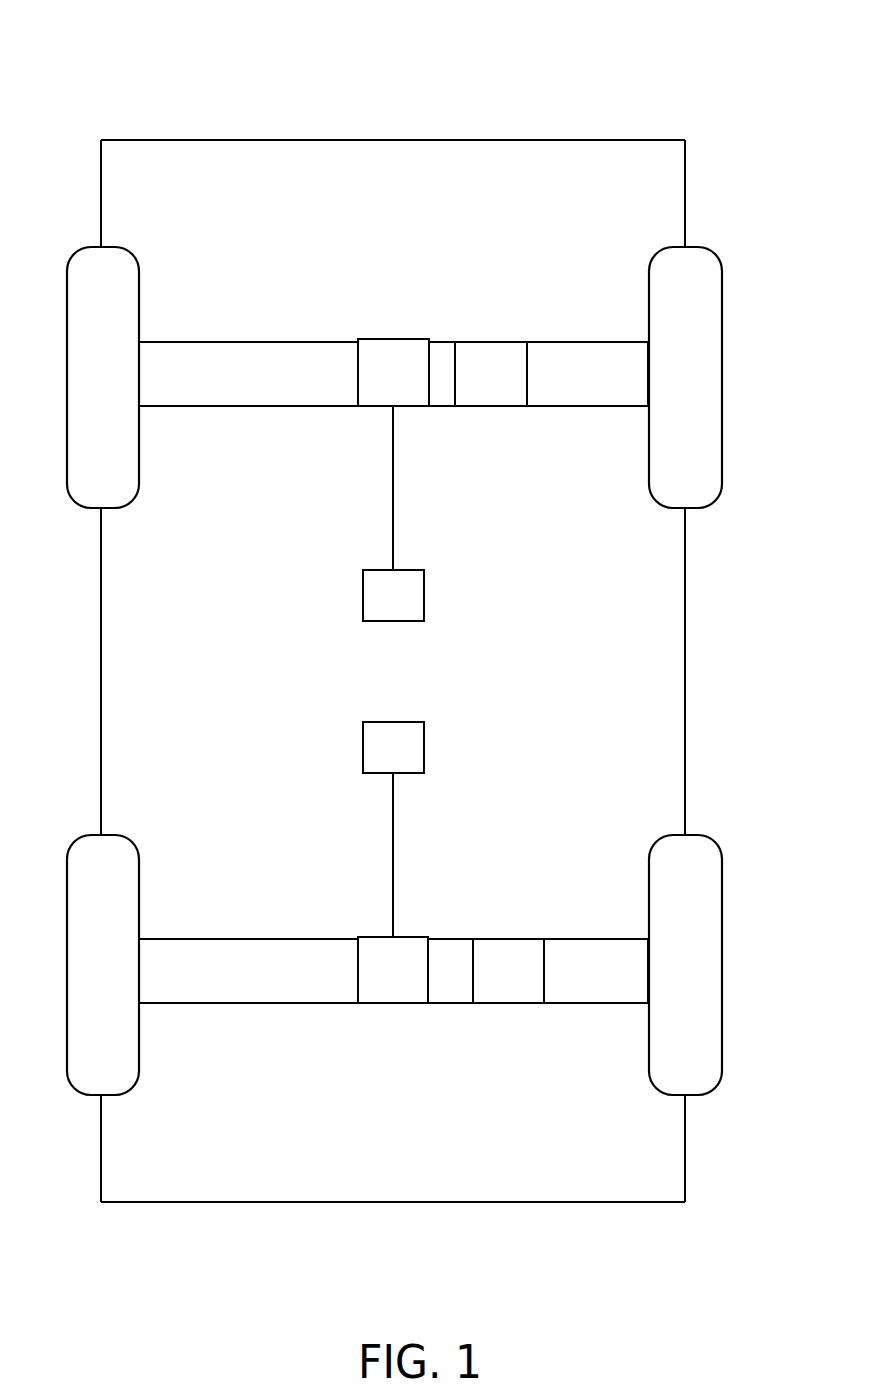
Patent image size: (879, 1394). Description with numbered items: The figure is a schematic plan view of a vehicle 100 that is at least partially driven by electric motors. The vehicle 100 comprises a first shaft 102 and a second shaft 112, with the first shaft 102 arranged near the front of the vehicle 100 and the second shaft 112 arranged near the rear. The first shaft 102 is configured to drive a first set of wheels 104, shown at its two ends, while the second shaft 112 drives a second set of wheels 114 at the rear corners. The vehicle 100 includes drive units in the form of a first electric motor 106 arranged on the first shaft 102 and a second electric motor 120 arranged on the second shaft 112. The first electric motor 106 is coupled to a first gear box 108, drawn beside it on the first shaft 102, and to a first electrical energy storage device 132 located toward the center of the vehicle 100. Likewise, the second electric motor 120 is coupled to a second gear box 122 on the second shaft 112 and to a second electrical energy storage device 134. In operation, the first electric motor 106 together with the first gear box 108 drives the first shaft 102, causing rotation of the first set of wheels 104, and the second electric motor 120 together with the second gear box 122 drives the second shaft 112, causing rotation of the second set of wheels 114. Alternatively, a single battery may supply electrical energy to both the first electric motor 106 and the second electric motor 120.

The vehicle 100 is at (734, 28).
The first shaft 102 is at (551, 341).
The first set of wheels 104 is at (73, 258).
The first electric motor 106 is at (372, 385).
The first gear box 108 is at (470, 385).
The second shaft 112 is at (560, 938).
The second set of wheels 114 is at (76, 840).
The second electric motor 120 is at (372, 982).
The second gear box 122 is at (487, 982).
The first electrical energy storage device 132 is at (372, 605).
The second electrical energy storage device 134 is at (372, 757).